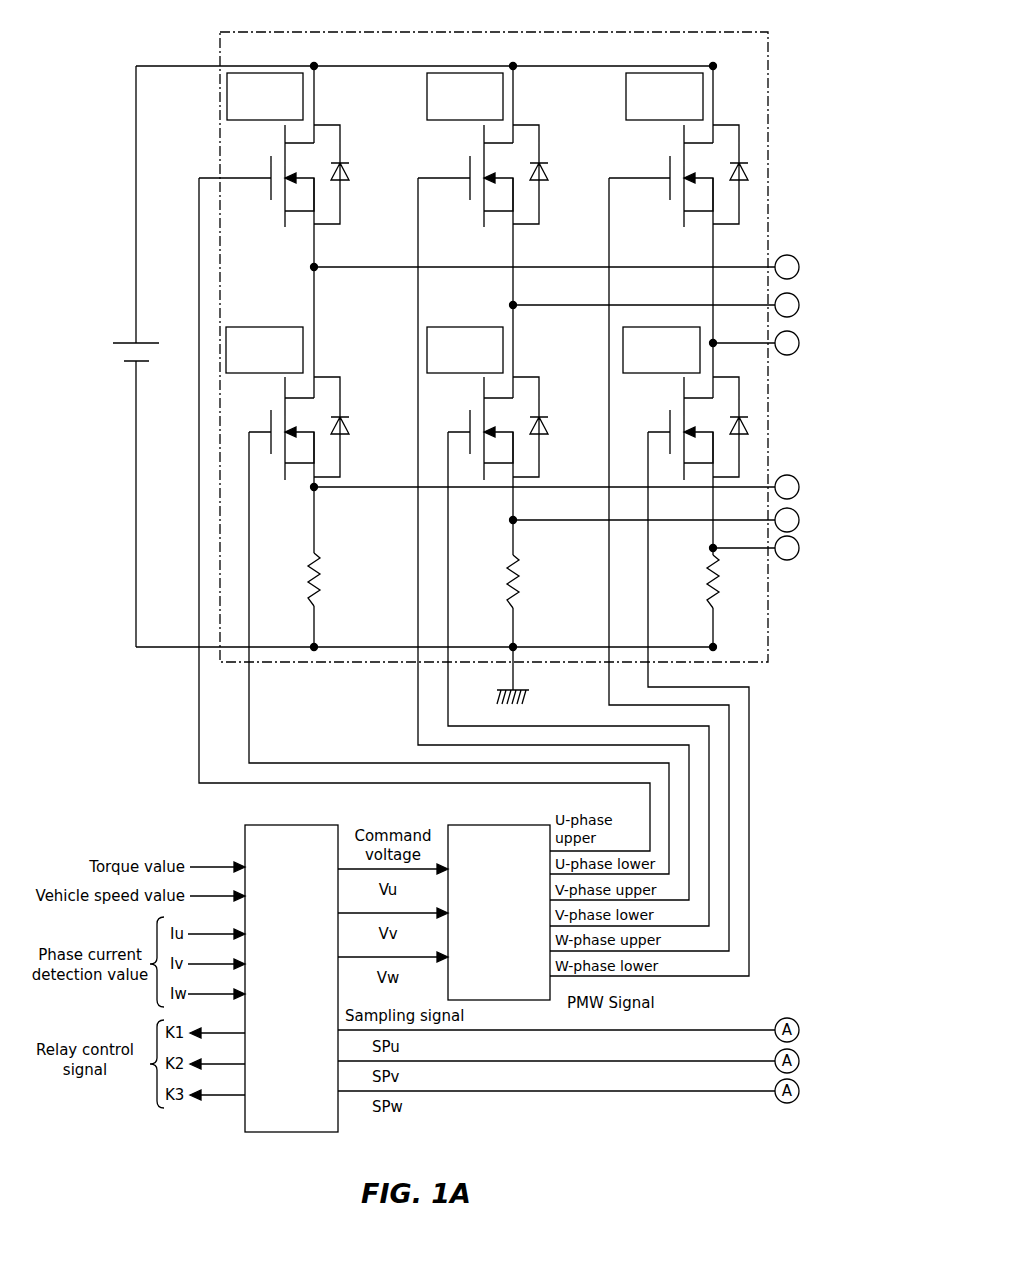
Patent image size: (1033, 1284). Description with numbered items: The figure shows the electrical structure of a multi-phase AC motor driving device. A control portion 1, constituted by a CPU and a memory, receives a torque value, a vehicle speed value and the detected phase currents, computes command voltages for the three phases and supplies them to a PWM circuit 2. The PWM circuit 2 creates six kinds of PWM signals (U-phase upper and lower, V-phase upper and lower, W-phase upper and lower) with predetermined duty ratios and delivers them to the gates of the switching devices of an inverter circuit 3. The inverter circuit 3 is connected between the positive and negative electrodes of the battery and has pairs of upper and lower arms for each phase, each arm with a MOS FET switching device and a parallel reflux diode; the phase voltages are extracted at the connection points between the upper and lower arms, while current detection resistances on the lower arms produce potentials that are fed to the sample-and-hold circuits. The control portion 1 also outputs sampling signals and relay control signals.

The control portion 1 is at (268, 825).
The PWM circuit 2 is at (470, 825).
The inverter circuit 3 is at (268, 31).